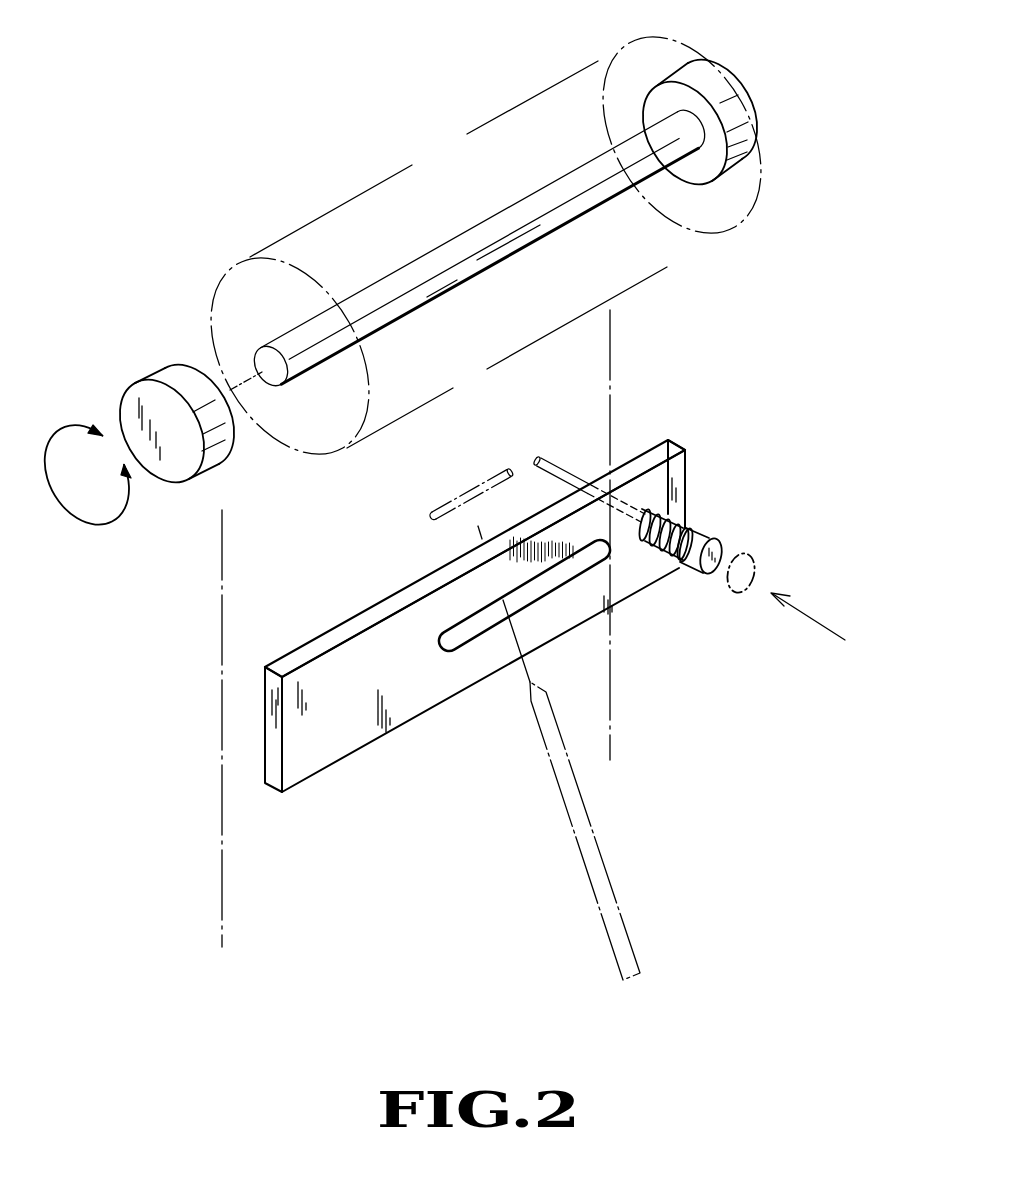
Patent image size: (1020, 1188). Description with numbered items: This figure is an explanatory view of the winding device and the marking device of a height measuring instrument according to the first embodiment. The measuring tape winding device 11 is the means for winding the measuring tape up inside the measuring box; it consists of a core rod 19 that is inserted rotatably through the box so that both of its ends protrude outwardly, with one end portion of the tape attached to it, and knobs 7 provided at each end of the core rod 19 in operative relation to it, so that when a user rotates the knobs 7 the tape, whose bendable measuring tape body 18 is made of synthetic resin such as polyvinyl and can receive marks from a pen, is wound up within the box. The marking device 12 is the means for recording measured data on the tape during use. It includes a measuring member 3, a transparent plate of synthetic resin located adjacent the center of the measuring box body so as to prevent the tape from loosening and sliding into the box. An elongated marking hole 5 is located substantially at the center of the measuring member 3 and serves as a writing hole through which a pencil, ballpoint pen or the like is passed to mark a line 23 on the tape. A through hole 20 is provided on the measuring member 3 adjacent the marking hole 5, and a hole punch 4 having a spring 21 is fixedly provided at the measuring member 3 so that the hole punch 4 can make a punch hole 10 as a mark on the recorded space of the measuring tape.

The measuring member 3 is at (475, 645).
The hole punch 4 is at (698, 513).
The marking hole 5 is at (480, 621).
The knob 7 is at (163, 370).
The punch hole 10 is at (543, 456).
The measuring tape winding device 11 is at (486, 245).
The marking device 12 is at (330, 629).
The measuring tape body 18 is at (688, 278).
The core rod 19 is at (490, 220).
The through hole 20 is at (647, 512).
The spring 21 is at (688, 517).
The line 23 is at (453, 502).